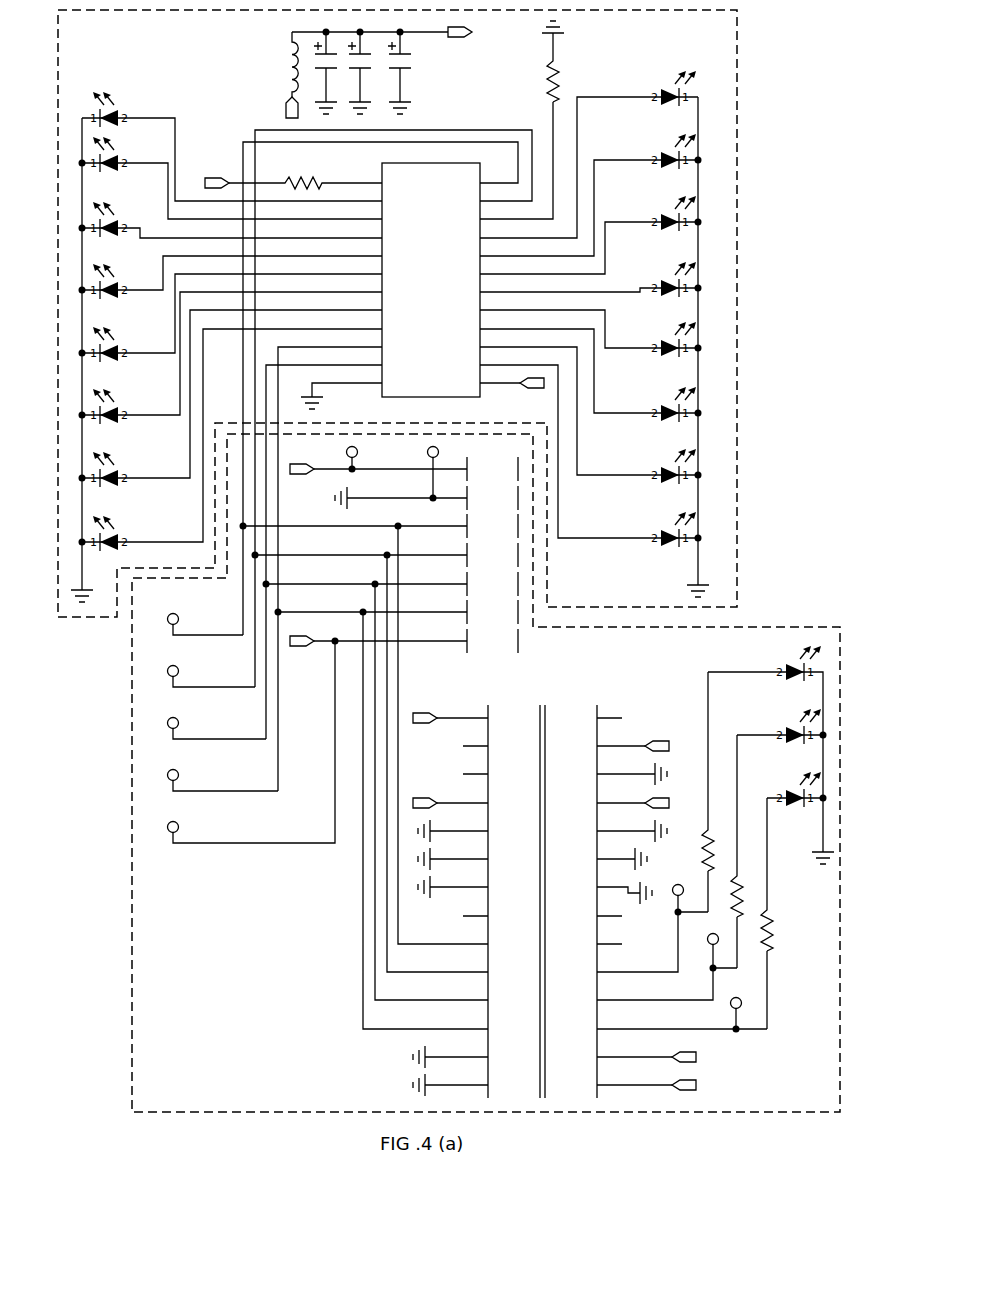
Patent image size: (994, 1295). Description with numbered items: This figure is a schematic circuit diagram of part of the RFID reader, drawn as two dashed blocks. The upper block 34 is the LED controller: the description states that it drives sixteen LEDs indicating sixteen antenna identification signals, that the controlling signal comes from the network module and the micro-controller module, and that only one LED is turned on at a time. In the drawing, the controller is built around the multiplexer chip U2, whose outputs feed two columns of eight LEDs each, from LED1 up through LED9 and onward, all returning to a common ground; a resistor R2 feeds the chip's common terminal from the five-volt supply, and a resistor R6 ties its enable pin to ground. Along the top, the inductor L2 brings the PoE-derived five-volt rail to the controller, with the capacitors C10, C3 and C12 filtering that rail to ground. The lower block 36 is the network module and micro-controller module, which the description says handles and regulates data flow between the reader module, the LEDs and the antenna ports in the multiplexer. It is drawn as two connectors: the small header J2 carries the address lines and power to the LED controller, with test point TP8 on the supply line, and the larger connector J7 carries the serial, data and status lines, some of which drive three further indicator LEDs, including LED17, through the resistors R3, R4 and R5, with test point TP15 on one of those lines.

The LED controller block 34 is at (738, 187).
The network module and micro-controller module block 36 is at (131, 936).
The HCF4067 analog multiplexer U2 is at (429, 280).
The resistor R2 is at (291, 172).
The resistor R6 is at (529, 120).
The inductor L2 is at (282, 75).
The capacitor C10 is at (318, 73).
The capacitor C3 is at (352, 73).
The capacitor C12 is at (392, 73).
The connector J2 is at (492, 555).
The connector J7 is at (542, 901).
The resistor R3 is at (717, 792).
The resistor R4 is at (746, 851).
The resistor R5 is at (776, 913).
The light emitting diode LED1 is at (123, 530).
The light emitting diode LED9 is at (657, 526).
The light emitting diode LED17 is at (779, 786).
The test point TP8 is at (337, 456).
The test point TP15 is at (672, 886).